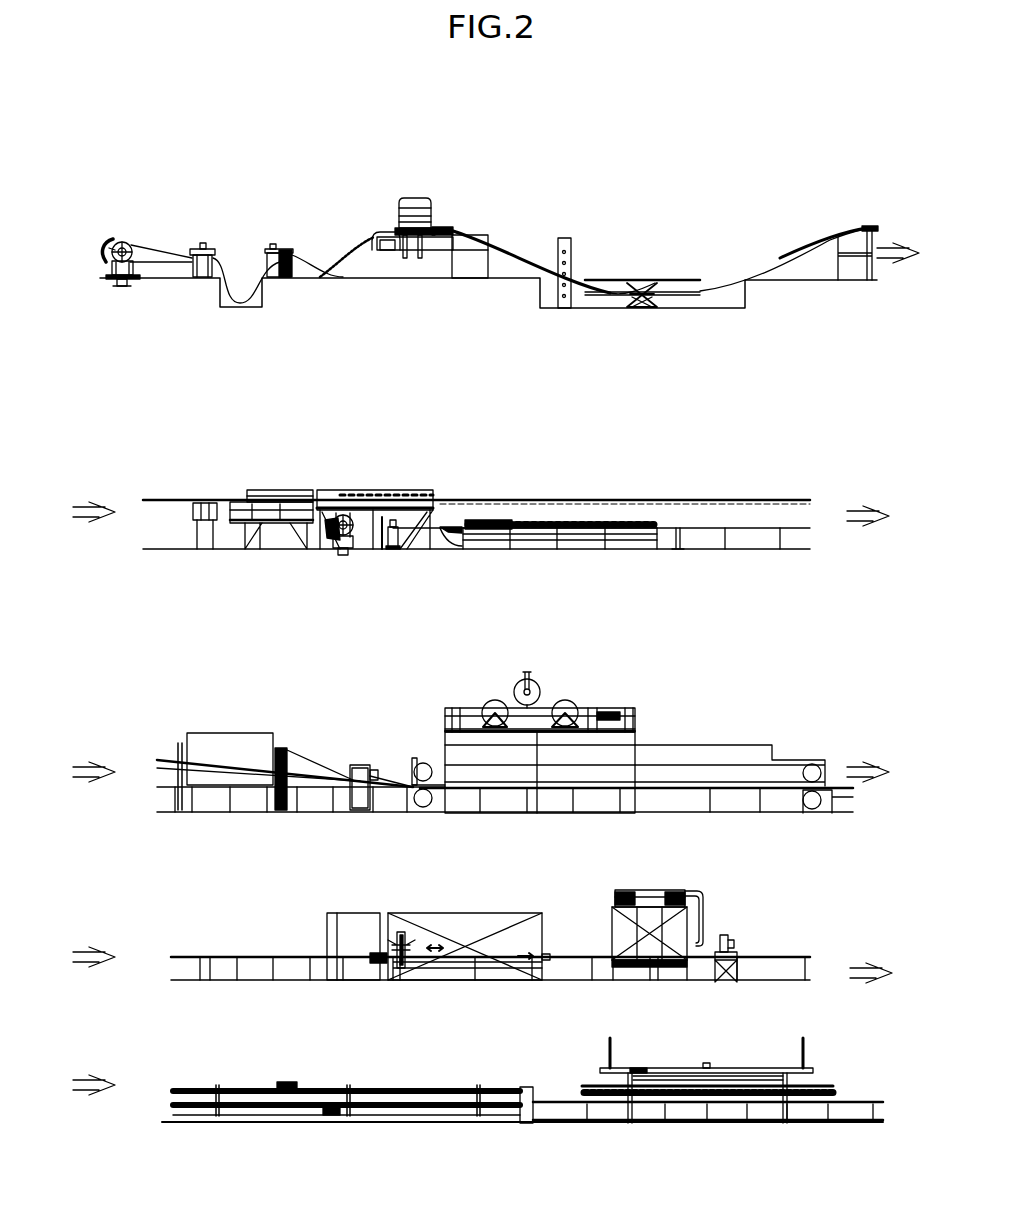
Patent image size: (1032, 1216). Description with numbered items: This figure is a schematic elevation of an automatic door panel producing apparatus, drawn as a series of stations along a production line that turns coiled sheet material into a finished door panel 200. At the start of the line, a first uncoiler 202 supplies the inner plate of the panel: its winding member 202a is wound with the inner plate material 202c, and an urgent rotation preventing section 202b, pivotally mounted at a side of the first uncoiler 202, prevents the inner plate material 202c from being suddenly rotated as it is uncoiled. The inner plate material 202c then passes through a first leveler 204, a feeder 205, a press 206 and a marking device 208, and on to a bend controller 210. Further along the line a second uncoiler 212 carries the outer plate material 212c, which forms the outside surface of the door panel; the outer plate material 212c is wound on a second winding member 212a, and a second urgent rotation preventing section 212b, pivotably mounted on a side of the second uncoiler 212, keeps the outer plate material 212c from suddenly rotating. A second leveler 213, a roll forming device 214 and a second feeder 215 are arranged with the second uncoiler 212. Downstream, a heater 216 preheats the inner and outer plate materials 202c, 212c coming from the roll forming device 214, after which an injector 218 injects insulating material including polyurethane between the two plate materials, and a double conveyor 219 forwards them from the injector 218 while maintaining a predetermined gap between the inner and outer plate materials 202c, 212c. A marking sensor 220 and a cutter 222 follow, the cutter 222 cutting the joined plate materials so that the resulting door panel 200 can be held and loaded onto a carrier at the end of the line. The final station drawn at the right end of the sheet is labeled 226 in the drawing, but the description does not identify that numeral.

The door panel 200 is at (258, 912).
The first uncoiler 202 is at (127, 238).
The winding member 202a is at (131, 266).
The urgent rotation preventing section 202b is at (110, 238).
The inner plate material 202c is at (153, 249).
The first leveler 204 is at (291, 243).
The feeder 205 is at (388, 231).
The press 206 is at (433, 196).
The marking device 208 is at (456, 228).
The bend controller 210 is at (669, 261).
The second uncoiler 212 is at (327, 551).
The second winding member 212a is at (365, 489).
The second urgent rotation preventing section 212b is at (293, 498).
The outer plate material 212c is at (447, 534).
The second leveler 213 is at (381, 553).
The roll forming device 214 is at (471, 485).
The second feeder 215 is at (558, 553).
The heater 216 is at (237, 733).
The injector 218 is at (354, 764).
The conveyor 219 is at (432, 768).
The marking sensor 220 is at (347, 911).
The cutter 222 is at (445, 911).
The stacker 226 is at (669, 1060).